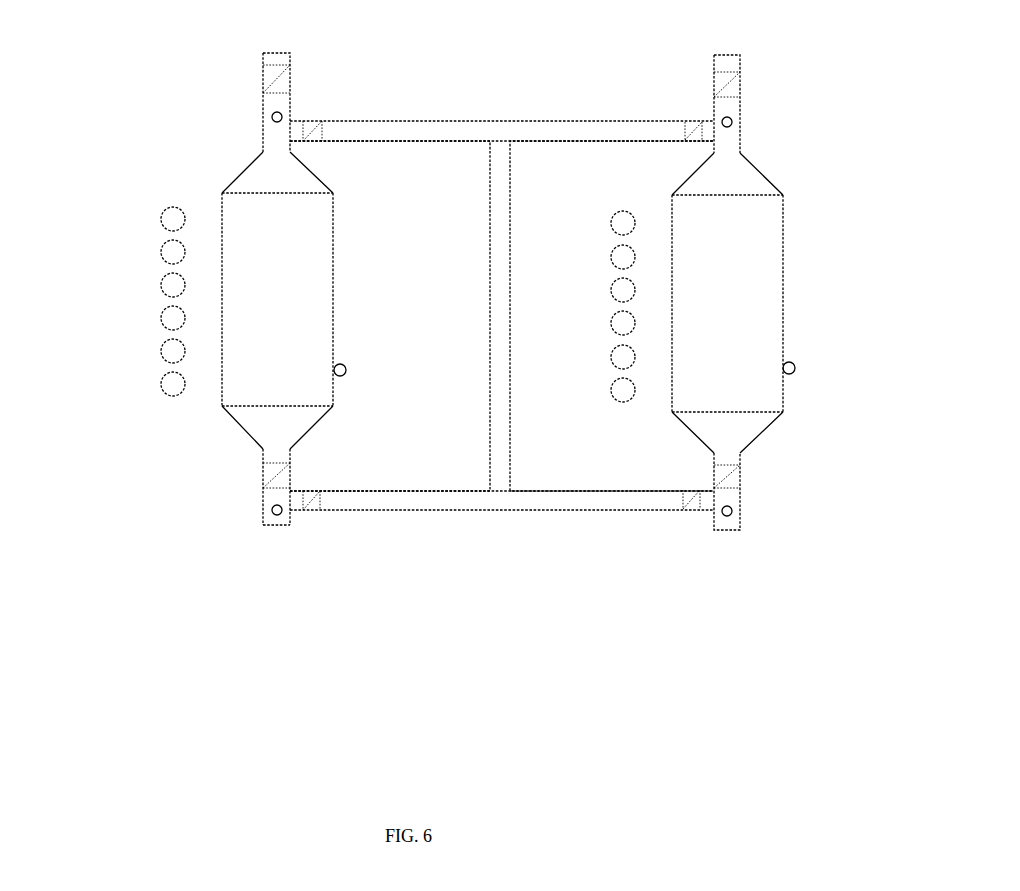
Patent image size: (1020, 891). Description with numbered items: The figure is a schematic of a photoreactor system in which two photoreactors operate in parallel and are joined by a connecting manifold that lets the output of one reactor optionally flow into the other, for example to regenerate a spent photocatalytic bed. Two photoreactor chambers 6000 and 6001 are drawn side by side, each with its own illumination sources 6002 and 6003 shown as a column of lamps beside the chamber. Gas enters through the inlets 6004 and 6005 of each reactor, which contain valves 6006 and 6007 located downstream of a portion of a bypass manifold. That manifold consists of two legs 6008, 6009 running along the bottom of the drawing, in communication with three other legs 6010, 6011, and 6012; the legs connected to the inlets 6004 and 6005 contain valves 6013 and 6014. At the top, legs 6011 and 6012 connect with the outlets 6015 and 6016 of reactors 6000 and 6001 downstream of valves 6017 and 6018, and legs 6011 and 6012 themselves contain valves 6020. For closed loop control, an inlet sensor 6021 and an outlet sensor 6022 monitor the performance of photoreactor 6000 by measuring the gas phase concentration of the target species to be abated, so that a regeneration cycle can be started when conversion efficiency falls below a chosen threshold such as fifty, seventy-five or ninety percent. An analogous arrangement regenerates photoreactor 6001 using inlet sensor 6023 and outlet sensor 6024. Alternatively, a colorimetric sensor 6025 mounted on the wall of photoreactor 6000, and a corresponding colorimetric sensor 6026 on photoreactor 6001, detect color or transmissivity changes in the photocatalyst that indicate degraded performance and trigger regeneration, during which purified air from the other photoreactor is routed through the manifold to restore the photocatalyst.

The photoreactor chamber 6000 is at (222, 385).
The photoreactor chamber 6001 is at (783, 317).
The illumination source 6002 is at (152, 288).
The illumination source 6003 is at (605, 283).
The inlet 6004 is at (314, 122).
The inlet 6005 is at (726, 532).
The valve 6006 is at (263, 477).
The valve 6007 is at (740, 478).
The leg 6008 is at (430, 511).
The leg 6009 is at (592, 511).
The leg 6010 is at (490, 291).
The leg 6011 is at (418, 122).
The leg 6012 is at (572, 122).
The valve 6013 is at (318, 513).
The valve 6014 is at (698, 500).
The outlet 6015 is at (263, 56).
The outlet 6016 is at (740, 56).
The valve 6017 is at (263, 83).
The valve 6018 is at (740, 88).
The valve 6020 is at (693, 128).
The inlet sensor 6021 is at (272, 512).
The outlet sensor 6022 is at (272, 117).
The inlet sensor 6023 is at (732, 512).
The outlet sensor 6024 is at (732, 122).
The colorimetric sensor 6025 is at (345, 377).
The colorimetric sensor 6026 is at (796, 370).